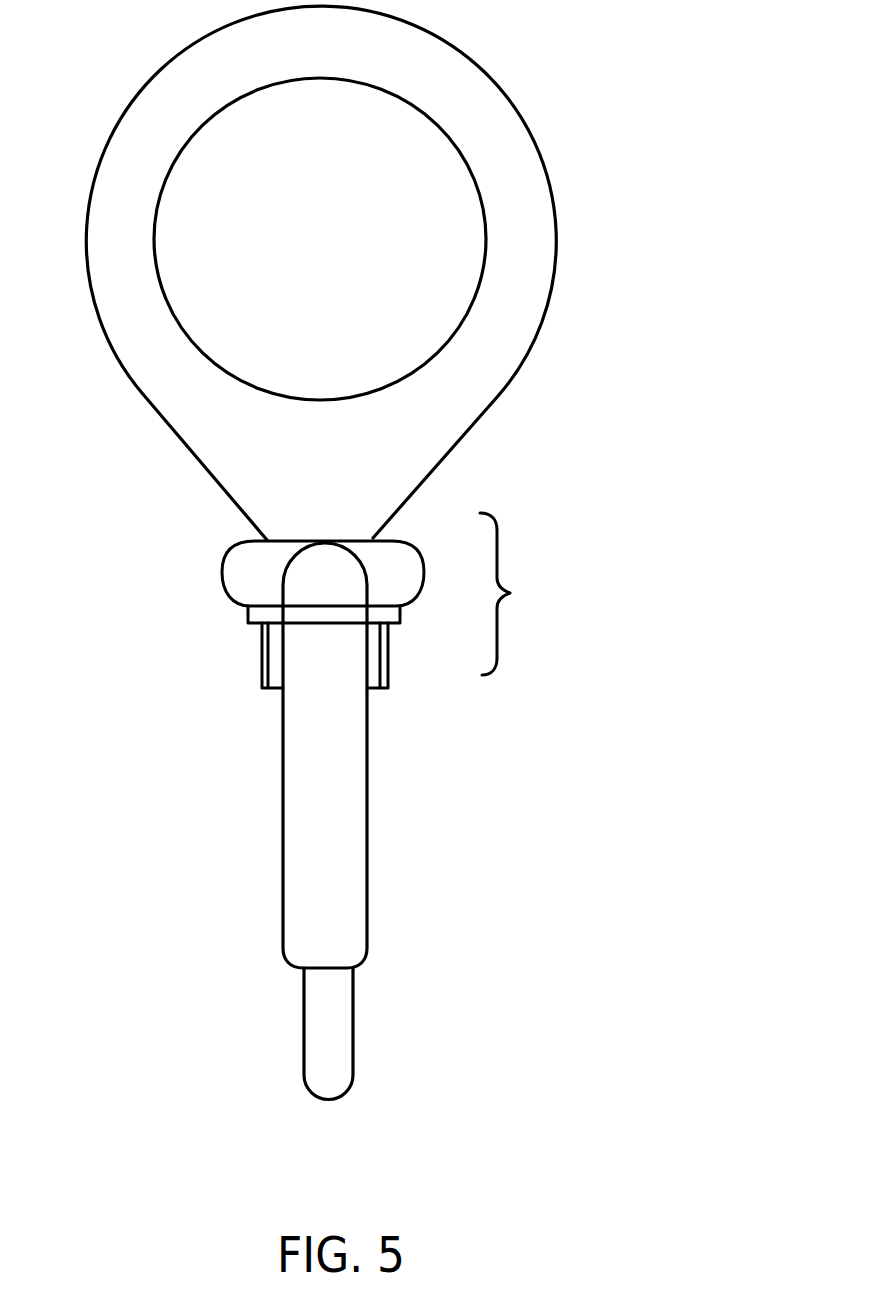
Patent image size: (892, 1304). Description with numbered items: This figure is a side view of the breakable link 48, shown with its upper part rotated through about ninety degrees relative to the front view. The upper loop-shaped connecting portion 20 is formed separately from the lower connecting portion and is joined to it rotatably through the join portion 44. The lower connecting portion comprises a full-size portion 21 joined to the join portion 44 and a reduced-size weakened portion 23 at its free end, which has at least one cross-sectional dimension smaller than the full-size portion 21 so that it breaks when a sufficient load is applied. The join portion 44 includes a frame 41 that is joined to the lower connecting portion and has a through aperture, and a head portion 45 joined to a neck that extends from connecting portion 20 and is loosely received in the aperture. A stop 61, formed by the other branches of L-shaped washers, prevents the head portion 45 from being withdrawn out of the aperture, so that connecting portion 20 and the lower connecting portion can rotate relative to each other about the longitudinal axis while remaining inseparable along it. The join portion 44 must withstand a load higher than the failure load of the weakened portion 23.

The loop-shaped connecting portion 20 is at (425, 209).
The full-size portion 21 is at (369, 913).
The weakened portion 23 is at (353, 1073).
The frame 41 is at (222, 570).
The join portion 44 is at (514, 594).
The head portion 45 is at (268, 668).
The breakable link 48 is at (655, 559).
The stop 61 is at (247, 623).